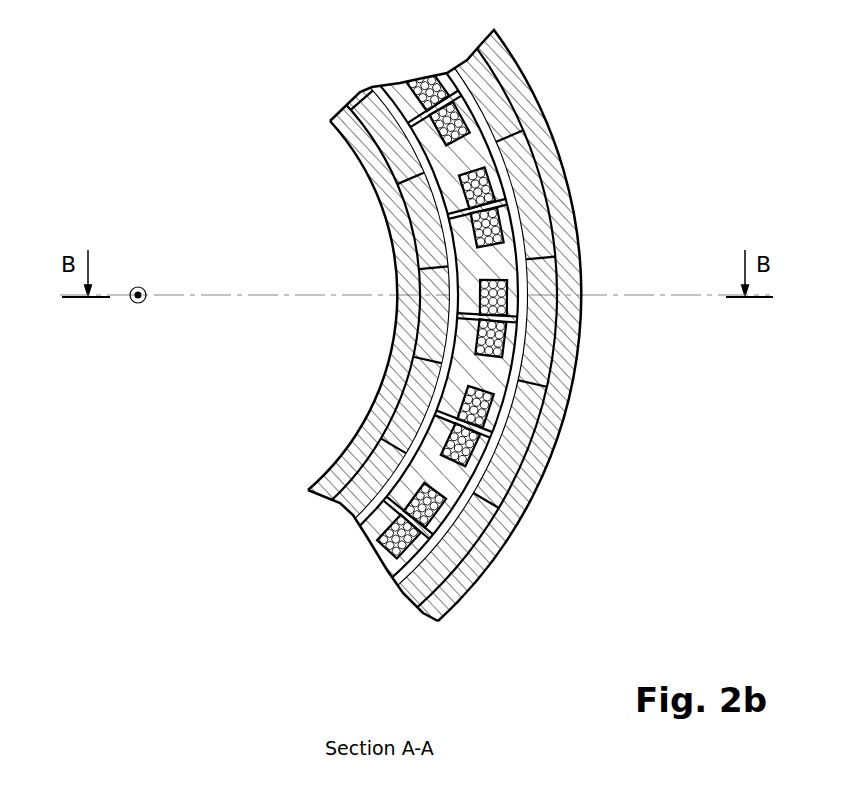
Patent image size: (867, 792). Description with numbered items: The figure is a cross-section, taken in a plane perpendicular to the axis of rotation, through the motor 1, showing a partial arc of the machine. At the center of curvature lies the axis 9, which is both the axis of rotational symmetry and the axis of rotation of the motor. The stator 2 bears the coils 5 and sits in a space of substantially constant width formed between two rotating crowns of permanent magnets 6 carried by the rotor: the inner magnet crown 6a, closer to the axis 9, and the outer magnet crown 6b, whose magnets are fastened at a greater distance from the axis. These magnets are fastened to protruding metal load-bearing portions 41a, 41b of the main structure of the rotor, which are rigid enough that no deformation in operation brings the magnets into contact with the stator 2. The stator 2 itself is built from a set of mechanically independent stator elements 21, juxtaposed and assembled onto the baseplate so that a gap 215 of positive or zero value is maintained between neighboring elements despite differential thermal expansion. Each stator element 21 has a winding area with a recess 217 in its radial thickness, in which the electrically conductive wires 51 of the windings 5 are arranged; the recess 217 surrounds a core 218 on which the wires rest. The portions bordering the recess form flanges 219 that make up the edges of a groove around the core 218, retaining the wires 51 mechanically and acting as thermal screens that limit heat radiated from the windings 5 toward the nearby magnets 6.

The electric machine 1 is at (224, 403).
The stator 2 is at (420, 72).
The coils 5 is at (494, 182).
The permanent magnets 6 is at (400, 157).
The inner magnet crown 6a is at (337, 518).
The outer magnet crown 6b is at (405, 614).
The axis 9 is at (143, 285).
The stator element 21 is at (450, 188).
The protruding metal load-bearing portion 41a is at (385, 378).
The protruding metal load-bearing portion 41b is at (518, 510).
The electrically conductive wires 51 is at (484, 441).
The gap 215 is at (497, 208).
The recess 217 is at (438, 463).
The core 218 is at (487, 372).
The flanges 219 is at (470, 337).